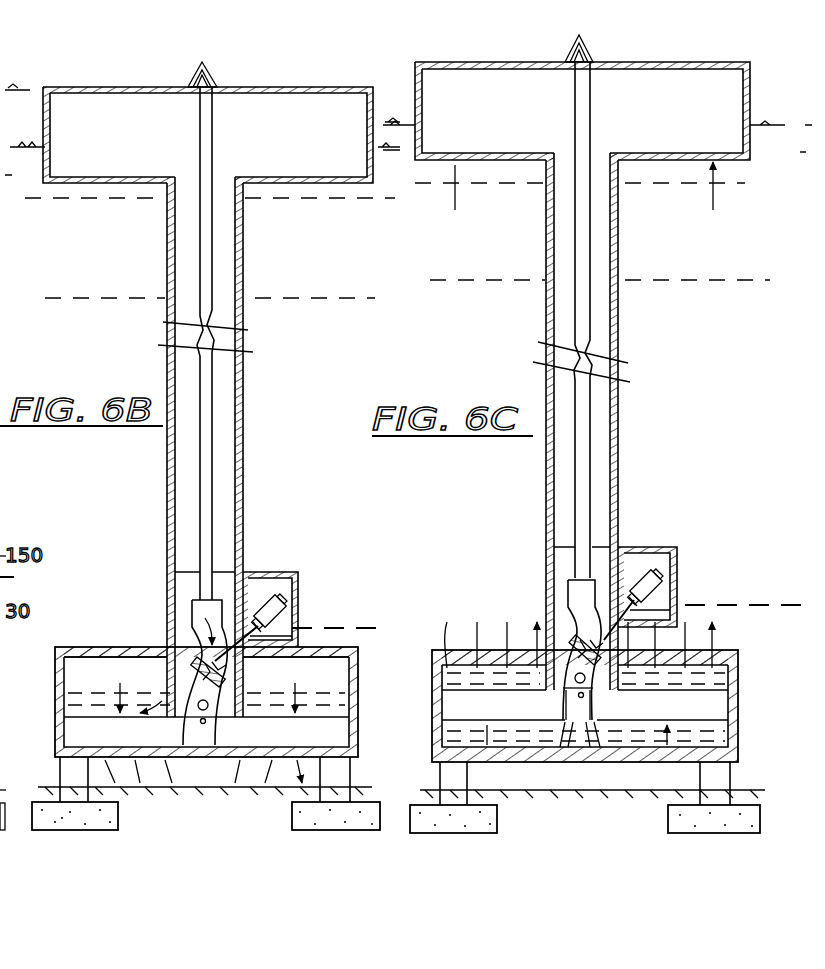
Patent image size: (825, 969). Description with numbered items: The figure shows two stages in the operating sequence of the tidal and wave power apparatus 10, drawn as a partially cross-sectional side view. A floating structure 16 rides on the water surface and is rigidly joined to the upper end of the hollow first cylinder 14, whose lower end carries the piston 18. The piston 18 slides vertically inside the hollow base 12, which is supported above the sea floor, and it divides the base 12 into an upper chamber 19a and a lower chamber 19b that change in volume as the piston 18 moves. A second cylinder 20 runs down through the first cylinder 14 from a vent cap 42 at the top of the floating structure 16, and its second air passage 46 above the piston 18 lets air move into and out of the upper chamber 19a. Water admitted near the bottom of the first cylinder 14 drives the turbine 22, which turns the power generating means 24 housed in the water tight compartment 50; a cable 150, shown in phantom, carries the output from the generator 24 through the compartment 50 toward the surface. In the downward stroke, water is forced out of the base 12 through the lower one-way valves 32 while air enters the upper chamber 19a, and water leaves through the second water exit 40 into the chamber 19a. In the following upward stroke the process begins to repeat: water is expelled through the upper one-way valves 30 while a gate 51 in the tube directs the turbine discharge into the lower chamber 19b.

In FIG. 6B, the apparatus 10 is at (284, 80).
In FIG. 6C, the apparatus 10 is at (664, 60).
In FIG. 6B, the floating structure 16 is at (336, 88).
In FIG. 6C, the floating structure 16 is at (723, 64).
In FIG. 6B, the vent cap 42 is at (210, 78).
In FIG. 6C, the vent cap 42 is at (586, 58).
In FIG. 6B, the first cylinder 14 is at (245, 380).
In FIG. 6C, the first cylinder 14 is at (619, 455).
In FIG. 6B, the second cylinder 20 is at (213, 447).
In FIG. 6C, the second cylinder 20 is at (592, 421).
In FIG. 6B, the base 12 is at (72, 647).
In FIG. 6B, the upper one-way valves 30 is at (300, 656).
In FIG. 6C, the upper one-way valves 30 is at (710, 651).
In FIG. 6B, the upper chamber 19a is at (66, 686).
In FIG. 6C, the upper chamber 19a is at (440, 692).
In FIG. 6C, the lower chamber 19b is at (728, 748).
In FIG. 6B, the piston 18 is at (329, 713).
In FIG. 6C, the piston 18 is at (730, 692).
In FIG. 6C, the turbine 22 is at (568, 630).
In FIG. 6B, the power generating means 24 is at (262, 596).
In FIG. 6C, the power generating means 24 is at (660, 588).
In FIG. 6B, the water tight compartment 50 is at (300, 587).
In FIG. 6C, the water tight compartment 50 is at (632, 547).
In FIG. 6B, the gate 51 is at (208, 718).
In FIG. 6C, the gate 51 is at (600, 692).
In FIG. 6C, the second water exit 40 is at (560, 680).
In FIG. 6C, the second air passage 46 is at (575, 692).
In FIG. 6B, the cable 150 is at (330, 628).
In FIG. 6C, the cable 150 is at (748, 604).
In FIG. 6B, the lower one-way valves 32 is at (236, 790).
In FIG. 6C, the lower one-way valves 32 is at (545, 765).